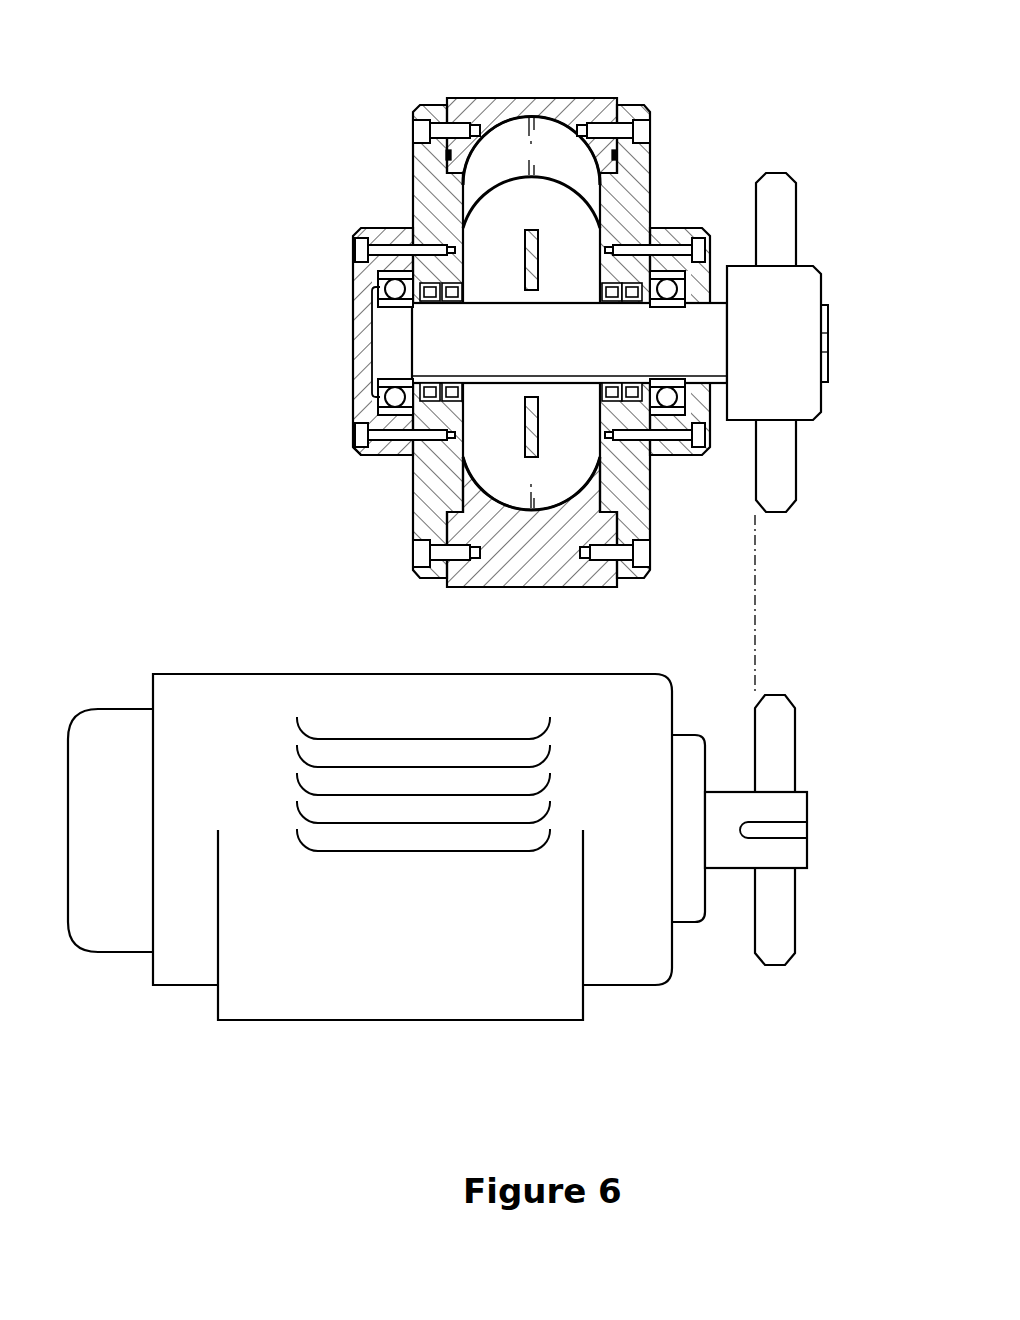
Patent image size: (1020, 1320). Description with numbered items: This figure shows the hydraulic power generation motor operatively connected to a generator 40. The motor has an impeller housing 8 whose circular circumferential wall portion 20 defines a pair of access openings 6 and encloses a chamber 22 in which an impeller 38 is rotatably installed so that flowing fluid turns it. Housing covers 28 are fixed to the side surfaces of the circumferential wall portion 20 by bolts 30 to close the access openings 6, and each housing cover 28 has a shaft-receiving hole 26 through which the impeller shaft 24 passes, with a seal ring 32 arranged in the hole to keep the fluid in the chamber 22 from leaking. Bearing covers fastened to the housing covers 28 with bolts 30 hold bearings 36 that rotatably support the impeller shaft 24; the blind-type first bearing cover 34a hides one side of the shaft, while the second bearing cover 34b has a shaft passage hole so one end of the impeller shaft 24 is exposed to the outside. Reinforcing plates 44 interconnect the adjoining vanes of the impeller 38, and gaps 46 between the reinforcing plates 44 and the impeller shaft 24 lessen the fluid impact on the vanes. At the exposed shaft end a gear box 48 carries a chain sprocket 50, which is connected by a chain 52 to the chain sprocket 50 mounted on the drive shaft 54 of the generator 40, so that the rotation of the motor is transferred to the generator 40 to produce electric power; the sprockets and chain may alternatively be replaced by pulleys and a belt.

The access openings 6 is at (522, 341).
The impeller housing 8 is at (487, 98).
The circumferential wall portion 20 is at (620, 165).
The chamber 22 is at (540, 138).
The impeller shaft 24 is at (447, 350).
The shaft-receiving hole 26 is at (640, 360).
The housing covers 28 is at (413, 178).
The bolts 30 is at (440, 122).
The seal ring 32 is at (377, 352).
The first bearing cover 34a is at (332, 363).
The second bearing cover 34b is at (705, 275).
The bearings 36 is at (410, 397).
The impeller 38 is at (490, 580).
The generator 40 is at (268, 698).
The reinforcing plates 44 is at (470, 455).
The gaps 46 is at (420, 447).
The gear box 48 is at (810, 285).
The chain sprocket 50 is at (775, 192).
The chain 52 is at (795, 572).
The drive shaft 54 is at (787, 755).